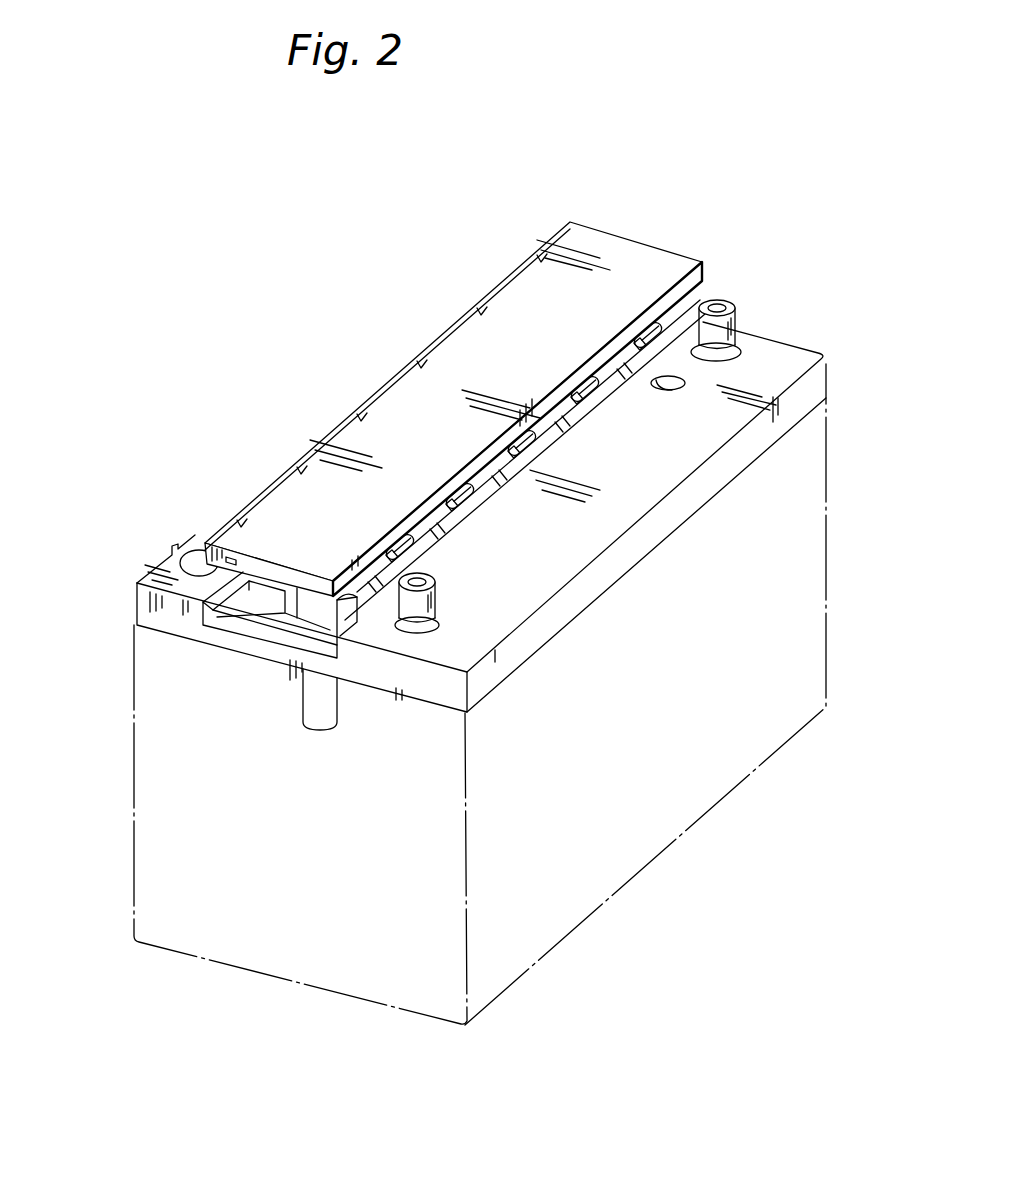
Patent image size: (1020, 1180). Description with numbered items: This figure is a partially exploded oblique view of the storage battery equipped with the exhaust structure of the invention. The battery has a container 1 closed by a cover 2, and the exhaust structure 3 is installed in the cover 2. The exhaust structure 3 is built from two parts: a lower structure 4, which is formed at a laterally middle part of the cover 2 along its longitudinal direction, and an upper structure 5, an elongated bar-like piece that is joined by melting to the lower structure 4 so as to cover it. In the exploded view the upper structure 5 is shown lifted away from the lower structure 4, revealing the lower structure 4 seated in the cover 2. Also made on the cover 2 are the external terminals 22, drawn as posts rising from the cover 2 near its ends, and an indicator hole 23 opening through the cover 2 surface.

The container 1 is at (782, 541).
The cover 2 is at (775, 338).
The exhaust structure 3 is at (82, 556).
The lower structure 4 is at (233, 630).
The upper structure 5 is at (259, 523).
The external terminal 22 is at (723, 335).
The indicator hole 23 is at (682, 390).